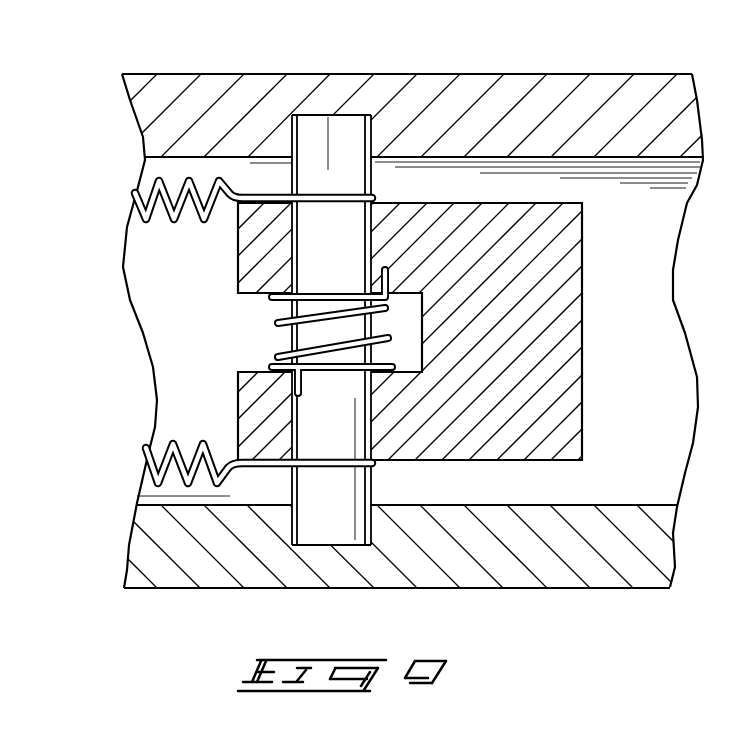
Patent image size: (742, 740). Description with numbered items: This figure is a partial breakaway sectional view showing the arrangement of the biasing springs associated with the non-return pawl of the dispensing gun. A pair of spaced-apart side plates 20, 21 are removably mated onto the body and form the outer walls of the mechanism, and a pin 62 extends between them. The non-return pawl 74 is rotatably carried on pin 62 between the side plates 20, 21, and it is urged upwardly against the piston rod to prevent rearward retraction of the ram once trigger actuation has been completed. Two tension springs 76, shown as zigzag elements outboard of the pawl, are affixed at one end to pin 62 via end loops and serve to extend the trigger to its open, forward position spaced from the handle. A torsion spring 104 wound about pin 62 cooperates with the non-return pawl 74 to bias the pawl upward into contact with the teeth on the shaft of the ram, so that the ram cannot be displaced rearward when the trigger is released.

The side plate 20 is at (470, 590).
The side plate 21 is at (432, 73).
The pin 62 is at (322, 132).
The non-return pawl 74 is at (588, 334).
The tension spring 76 is at (140, 230).
The torsion spring 104 is at (278, 324).